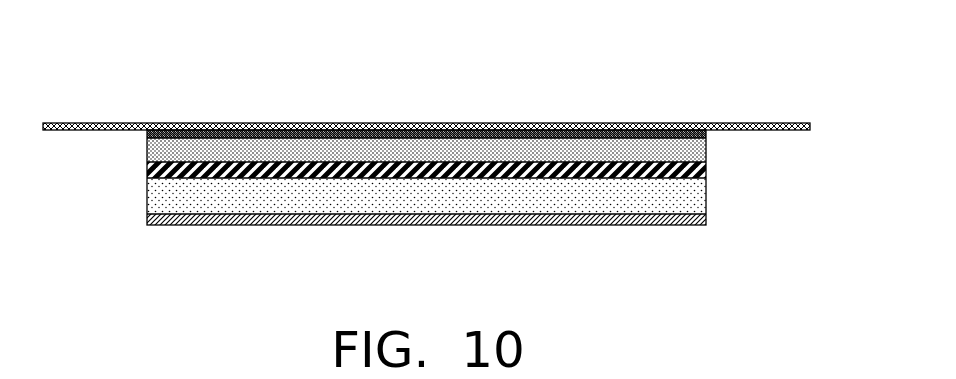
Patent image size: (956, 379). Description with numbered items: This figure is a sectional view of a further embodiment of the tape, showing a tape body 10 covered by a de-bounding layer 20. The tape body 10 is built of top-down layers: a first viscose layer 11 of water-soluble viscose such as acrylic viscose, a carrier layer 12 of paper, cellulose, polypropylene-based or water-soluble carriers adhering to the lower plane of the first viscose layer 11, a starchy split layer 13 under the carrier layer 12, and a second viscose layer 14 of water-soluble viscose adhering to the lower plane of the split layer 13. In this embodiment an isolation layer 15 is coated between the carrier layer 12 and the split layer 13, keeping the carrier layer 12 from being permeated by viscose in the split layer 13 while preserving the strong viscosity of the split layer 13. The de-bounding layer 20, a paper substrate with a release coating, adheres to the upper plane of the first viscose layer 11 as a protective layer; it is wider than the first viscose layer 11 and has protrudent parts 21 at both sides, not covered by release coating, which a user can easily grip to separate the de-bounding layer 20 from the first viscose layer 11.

The tape body 10 is at (717, 192).
The first viscose layer 11 is at (708, 134).
The carrier layer 12 is at (693, 150).
The split layer 13 is at (690, 200).
The second viscose layer 14 is at (683, 225).
The isolation layer 15 is at (147, 173).
The de-bounding layer 20 is at (772, 104).
The protrudent part 21 is at (75, 123).